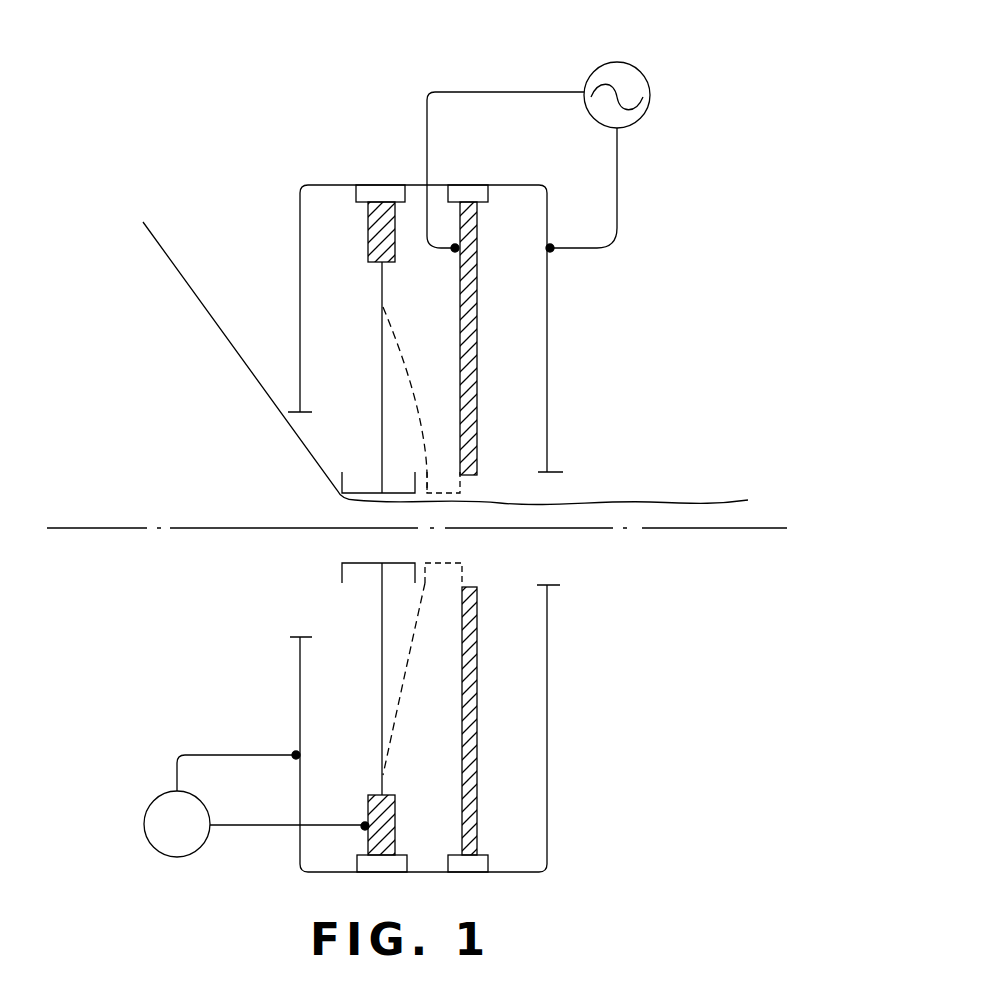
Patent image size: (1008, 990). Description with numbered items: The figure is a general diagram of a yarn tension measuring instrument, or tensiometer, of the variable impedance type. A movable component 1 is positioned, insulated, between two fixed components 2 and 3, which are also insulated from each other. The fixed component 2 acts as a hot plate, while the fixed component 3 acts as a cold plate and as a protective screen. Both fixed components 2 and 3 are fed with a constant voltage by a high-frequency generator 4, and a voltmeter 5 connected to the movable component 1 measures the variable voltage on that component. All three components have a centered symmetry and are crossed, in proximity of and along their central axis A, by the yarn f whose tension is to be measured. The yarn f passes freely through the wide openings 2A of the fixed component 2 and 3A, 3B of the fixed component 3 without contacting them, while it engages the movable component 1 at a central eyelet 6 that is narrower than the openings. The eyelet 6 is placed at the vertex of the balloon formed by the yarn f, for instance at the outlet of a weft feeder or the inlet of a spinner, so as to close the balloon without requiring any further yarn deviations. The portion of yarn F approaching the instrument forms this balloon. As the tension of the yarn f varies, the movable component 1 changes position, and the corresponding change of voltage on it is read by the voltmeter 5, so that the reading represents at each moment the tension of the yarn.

The movable component 1 is at (382, 378).
The fixed component 2 is at (477, 300).
The wide opening 2A is at (473, 553).
The fixed component 3 is at (300, 713).
The wide opening 3A is at (551, 546).
The wide opening 3B is at (311, 559).
The high-frequency generator 4 is at (622, 61).
The voltmeter 5 is at (155, 853).
The central eyelet 6 is at (316, 528).
The film F is at (202, 307).
The yarn f is at (658, 500).
The central axis A— A is at (417, 528).